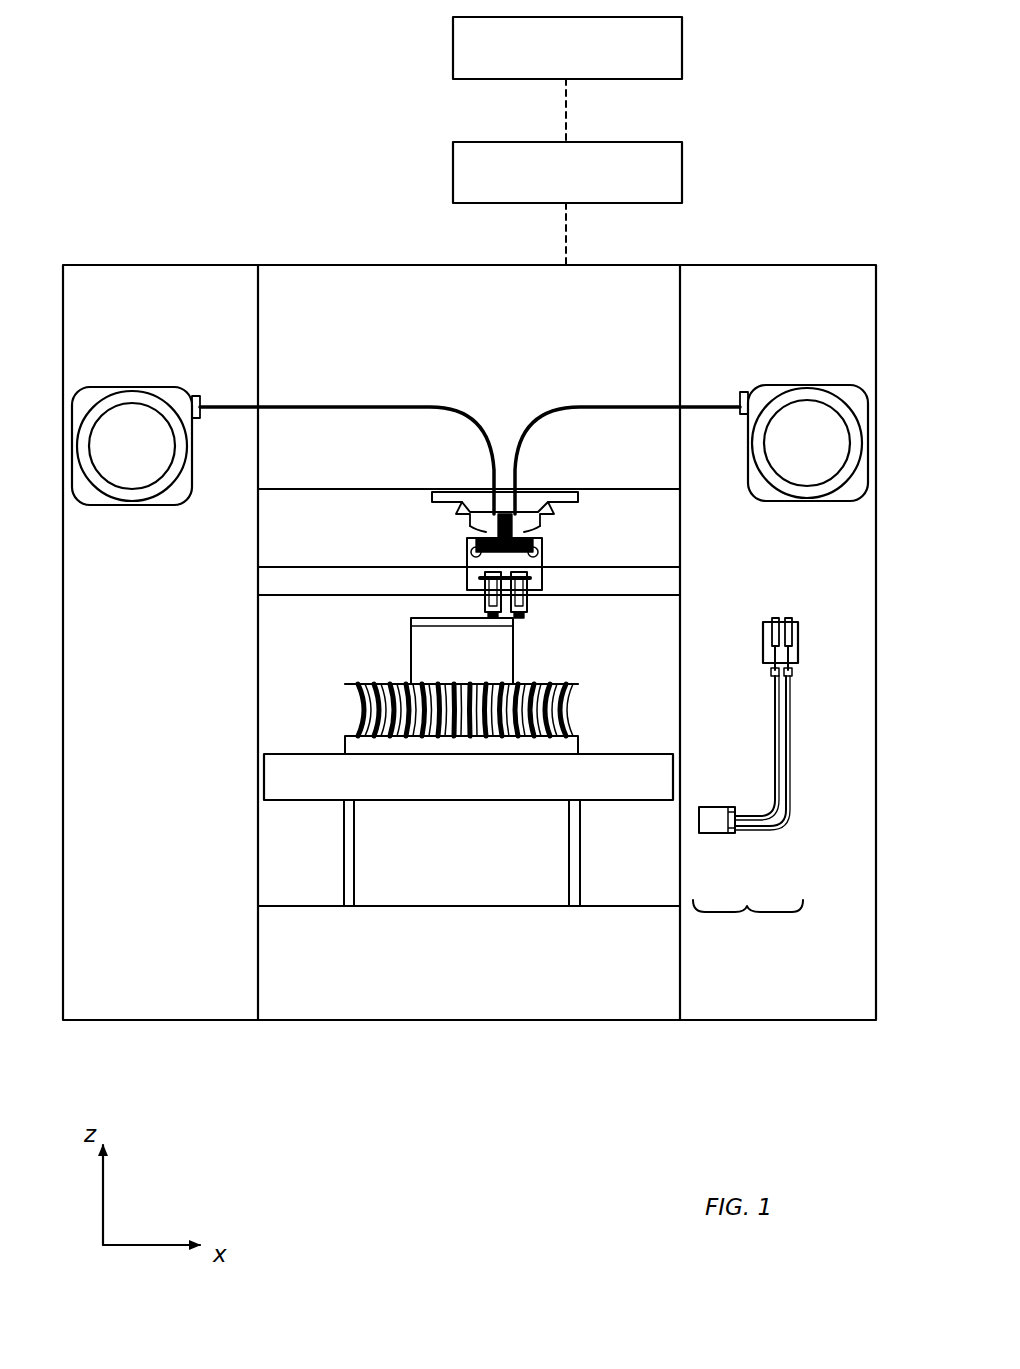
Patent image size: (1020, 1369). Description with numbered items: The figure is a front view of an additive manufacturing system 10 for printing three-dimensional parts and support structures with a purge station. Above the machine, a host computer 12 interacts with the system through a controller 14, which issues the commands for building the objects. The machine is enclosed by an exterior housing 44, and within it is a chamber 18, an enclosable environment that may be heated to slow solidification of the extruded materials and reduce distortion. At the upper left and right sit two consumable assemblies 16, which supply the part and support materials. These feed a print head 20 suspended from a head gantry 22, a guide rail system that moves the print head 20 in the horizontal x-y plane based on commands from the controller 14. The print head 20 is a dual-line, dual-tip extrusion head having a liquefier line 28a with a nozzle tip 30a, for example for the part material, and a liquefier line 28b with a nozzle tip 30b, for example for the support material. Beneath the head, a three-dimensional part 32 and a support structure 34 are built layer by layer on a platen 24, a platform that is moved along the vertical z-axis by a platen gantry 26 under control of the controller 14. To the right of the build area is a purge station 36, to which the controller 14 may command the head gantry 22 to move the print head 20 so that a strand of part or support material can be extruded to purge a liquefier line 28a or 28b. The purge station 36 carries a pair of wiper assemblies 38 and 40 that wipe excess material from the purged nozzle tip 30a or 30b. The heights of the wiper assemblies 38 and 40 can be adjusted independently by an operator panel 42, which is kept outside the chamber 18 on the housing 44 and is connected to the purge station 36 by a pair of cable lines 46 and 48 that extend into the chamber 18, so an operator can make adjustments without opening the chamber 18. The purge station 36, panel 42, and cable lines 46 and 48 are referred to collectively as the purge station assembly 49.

The additive manufacturing system 10 is at (255, 128).
The host computer 12 is at (682, 22).
The controller 14 is at (682, 160).
The consumable assemblies 16 is at (112, 386).
The chamber 18 is at (255, 718).
The print head 20 is at (550, 545).
The head gantry 22 is at (325, 566).
The platen 24 is at (322, 795).
The platen gantry 26 is at (352, 848).
The liquefier line 28a is at (476, 570).
The liquefier line 28b is at (540, 572).
The nozzle tip 30a is at (476, 612).
The nozzle tip 30b is at (532, 616).
The 3D part 32 is at (415, 662).
The support structure 34 is at (570, 748).
The purge station 36 is at (811, 623).
The wiper assembly 38 is at (775, 618).
The wiper assembly 40 is at (790, 618).
The operator panel 42 is at (713, 825).
The housing 44 is at (730, 265).
The cable line 46 is at (770, 712).
The cable line 48 is at (792, 714).
The purge station assembly 49 is at (803, 757).